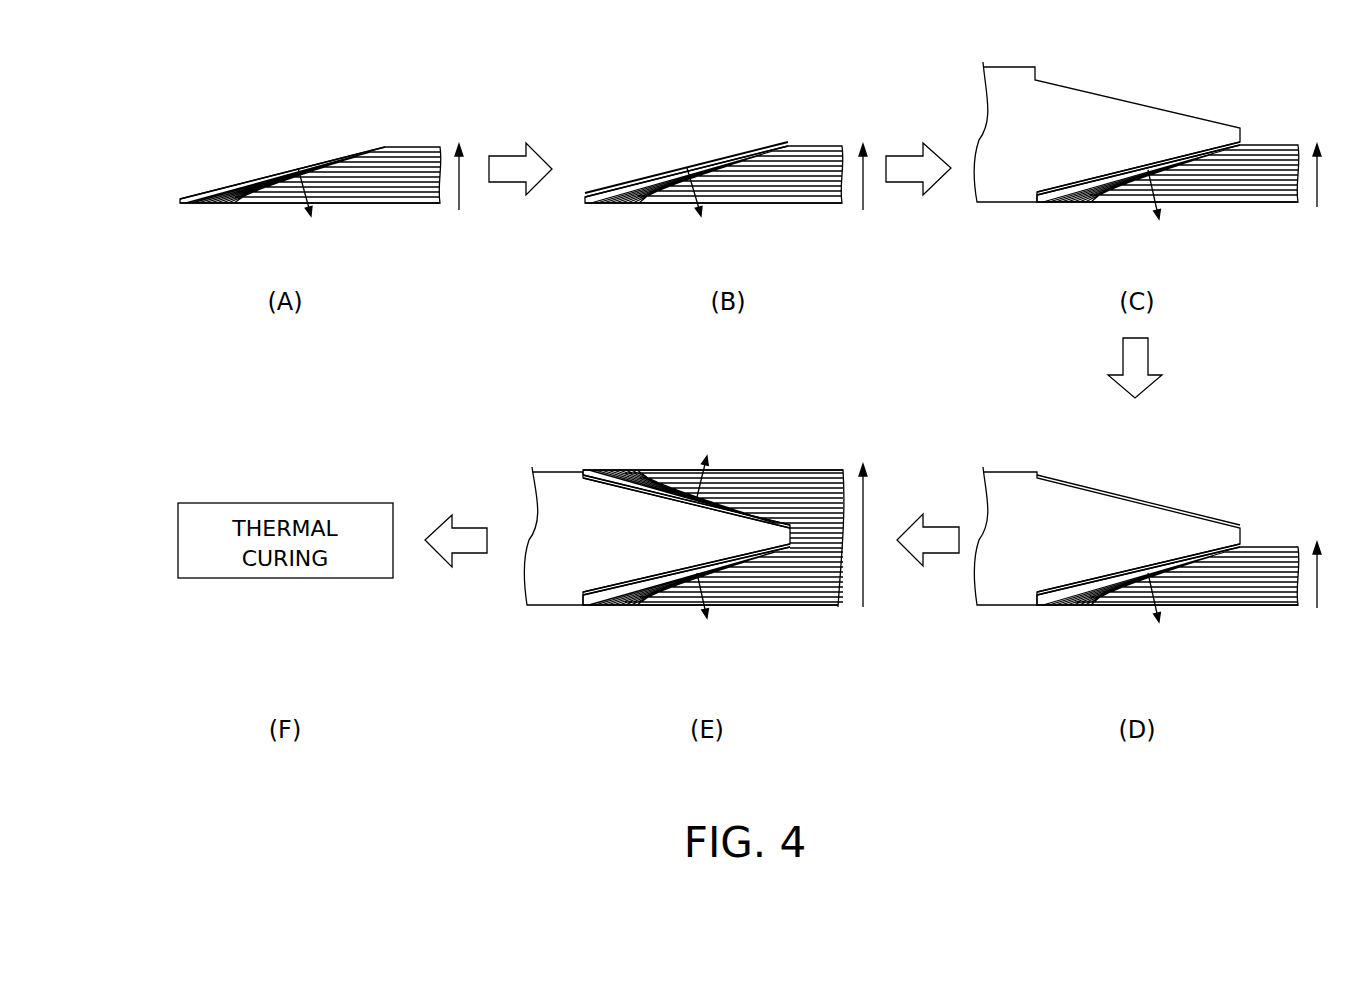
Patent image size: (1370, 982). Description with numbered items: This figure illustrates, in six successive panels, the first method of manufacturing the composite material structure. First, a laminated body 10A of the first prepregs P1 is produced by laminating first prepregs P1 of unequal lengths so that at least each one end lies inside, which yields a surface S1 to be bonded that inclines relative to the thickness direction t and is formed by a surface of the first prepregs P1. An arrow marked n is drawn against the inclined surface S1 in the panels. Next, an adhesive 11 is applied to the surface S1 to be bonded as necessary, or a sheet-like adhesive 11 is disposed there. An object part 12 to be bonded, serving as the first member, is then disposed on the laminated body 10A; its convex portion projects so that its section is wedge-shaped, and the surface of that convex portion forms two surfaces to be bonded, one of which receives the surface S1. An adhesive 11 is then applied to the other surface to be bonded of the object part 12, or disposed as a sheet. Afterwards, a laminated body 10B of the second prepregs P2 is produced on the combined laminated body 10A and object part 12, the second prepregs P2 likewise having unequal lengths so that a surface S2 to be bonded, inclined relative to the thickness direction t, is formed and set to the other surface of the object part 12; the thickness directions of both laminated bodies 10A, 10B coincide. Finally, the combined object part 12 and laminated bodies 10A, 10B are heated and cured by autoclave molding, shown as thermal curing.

The laminated body of the first prepregs 10A is at (408, 145).
The laminated body of the second prepregs 10B is at (808, 464).
The adhesive 11 is at (623, 180).
The object part to be bonded 12 is at (1007, 66).
The surface to be bonded S1 is at (285, 170).
The surface to be bonded S2 is at (653, 490).
The first prepregs P1 is at (335, 157).
The second prepregs P2 is at (752, 468).
The normal direction n is at (732, 409).
The thickness direction t is at (888, 359).